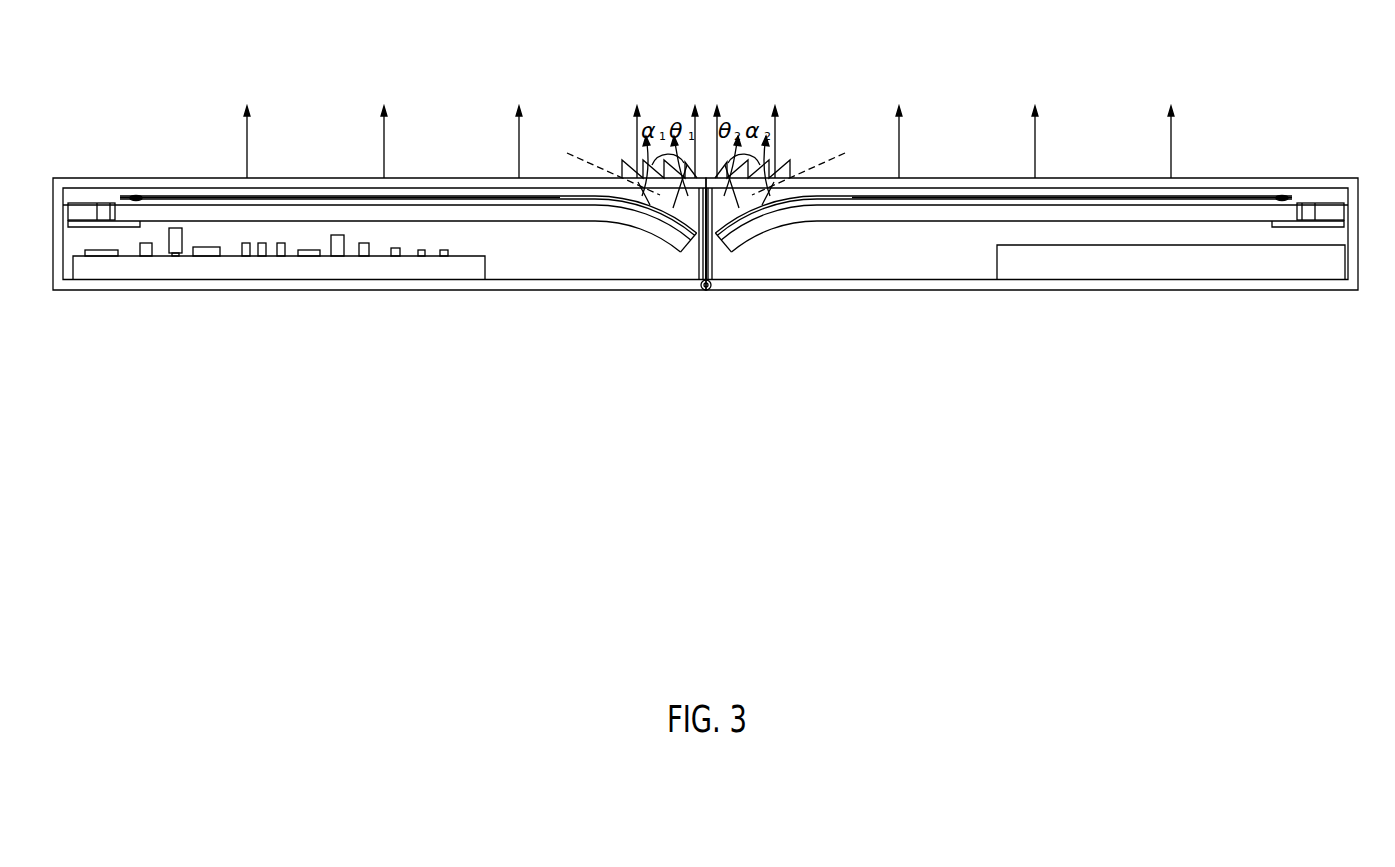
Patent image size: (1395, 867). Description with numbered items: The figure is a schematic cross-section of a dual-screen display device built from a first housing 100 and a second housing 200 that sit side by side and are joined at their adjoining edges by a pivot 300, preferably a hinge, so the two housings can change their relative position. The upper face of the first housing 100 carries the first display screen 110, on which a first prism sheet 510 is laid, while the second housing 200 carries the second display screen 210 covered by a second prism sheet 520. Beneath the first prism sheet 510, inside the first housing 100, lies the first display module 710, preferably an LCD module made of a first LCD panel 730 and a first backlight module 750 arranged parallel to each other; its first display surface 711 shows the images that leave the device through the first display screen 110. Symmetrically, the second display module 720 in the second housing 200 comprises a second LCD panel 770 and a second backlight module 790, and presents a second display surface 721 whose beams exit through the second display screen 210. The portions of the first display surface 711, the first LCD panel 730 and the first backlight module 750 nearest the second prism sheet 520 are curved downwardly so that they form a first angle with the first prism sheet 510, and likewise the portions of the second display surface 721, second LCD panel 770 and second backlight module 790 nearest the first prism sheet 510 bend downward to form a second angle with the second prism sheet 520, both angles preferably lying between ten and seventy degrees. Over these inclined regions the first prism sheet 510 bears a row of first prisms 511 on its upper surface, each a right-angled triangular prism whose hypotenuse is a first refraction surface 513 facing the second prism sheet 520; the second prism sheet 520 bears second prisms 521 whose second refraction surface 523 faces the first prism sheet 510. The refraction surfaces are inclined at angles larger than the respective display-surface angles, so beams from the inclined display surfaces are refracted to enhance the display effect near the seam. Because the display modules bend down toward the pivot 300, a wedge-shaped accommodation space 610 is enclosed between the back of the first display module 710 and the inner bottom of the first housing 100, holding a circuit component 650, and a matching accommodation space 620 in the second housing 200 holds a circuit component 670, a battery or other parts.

The first housing 100 is at (90, 290).
The second housing 200 is at (1320, 290).
The pivot 300 is at (708, 290).
The first display screen 110 is at (315, 165).
The second display screen 210 is at (1097, 165).
The first prism sheet 510 is at (472, 192).
The second prism sheet 520 is at (940, 192).
The first prisms 511 is at (630, 163).
The second prisms 521 is at (782, 163).
The first refraction surface 513 is at (630, 160).
The second refraction surface 523 is at (782, 160).
The accommodation space 610 is at (521, 264).
The accommodation space 620 is at (891, 264).
The circuit component 650 is at (255, 272).
The circuit component 670 is at (1157, 272).
The first display module 710 is at (95, 165).
The first display surface 711 is at (203, 196).
The first LCD panel 730 is at (153, 210).
The first backlight module 750 is at (115, 208).
The second display module 720 is at (1321, 166).
The second display surface 721 is at (1209, 196).
The second LCD panel 770 is at (1262, 206).
The second backlight module 790 is at (1300, 208).